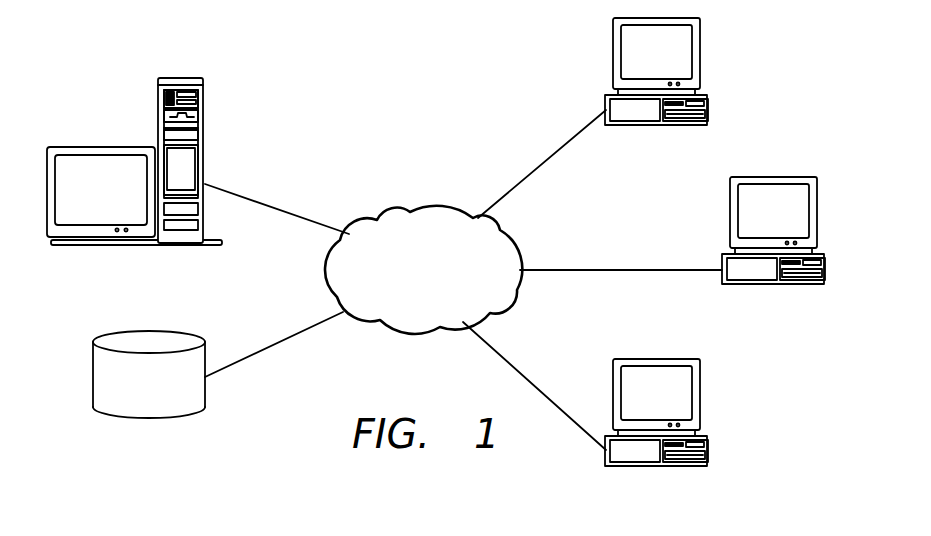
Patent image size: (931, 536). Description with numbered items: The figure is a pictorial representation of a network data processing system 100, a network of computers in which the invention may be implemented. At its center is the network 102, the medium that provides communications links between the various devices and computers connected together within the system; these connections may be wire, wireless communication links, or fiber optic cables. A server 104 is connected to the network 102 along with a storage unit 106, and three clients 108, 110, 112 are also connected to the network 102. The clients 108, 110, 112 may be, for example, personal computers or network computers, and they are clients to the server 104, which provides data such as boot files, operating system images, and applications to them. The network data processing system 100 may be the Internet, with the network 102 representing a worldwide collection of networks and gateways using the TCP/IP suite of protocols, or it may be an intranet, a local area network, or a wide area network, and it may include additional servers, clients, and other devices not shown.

The network data processing system 100 is at (291, 56).
The network 102 is at (443, 298).
The server 104 is at (160, 100).
The storage unit 106 is at (92, 375).
The client 108 is at (703, 60).
The client 110 is at (818, 218).
The client 112 is at (702, 402).